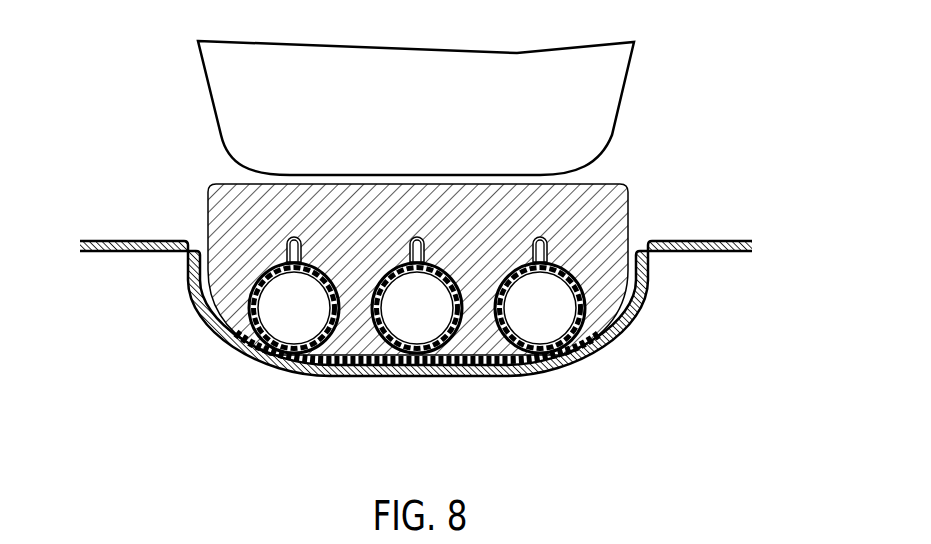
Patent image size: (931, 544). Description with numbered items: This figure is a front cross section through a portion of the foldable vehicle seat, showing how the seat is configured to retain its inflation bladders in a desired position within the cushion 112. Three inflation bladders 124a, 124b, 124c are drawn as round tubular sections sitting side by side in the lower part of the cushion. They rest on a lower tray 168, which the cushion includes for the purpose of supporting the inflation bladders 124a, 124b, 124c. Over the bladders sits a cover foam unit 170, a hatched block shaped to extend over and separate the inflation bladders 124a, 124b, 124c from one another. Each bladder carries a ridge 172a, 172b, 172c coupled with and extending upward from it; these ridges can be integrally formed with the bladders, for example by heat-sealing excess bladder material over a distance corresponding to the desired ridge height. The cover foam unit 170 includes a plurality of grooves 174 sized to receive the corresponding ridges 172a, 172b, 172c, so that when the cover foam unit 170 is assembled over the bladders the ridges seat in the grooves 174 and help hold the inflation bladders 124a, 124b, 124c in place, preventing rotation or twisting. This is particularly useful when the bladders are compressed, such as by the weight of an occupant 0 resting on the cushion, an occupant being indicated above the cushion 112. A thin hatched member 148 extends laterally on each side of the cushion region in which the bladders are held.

The shoe / footwear upper 0 is at (633, 111).
The cushion 112 is at (168, 198).
The plate 148 is at (703, 242).
The inflation bladder 124a is at (247, 353).
The inflation bladder 124b is at (370, 372).
The inflation bladder 124c is at (587, 344).
The cover foam unit 170 is at (593, 217).
The lower tray 168 is at (431, 371).
The grooves 174 is at (292, 237).
The ridge 172a is at (292, 251).
The ridge 172b is at (427, 264).
The ridge 172c is at (541, 253).